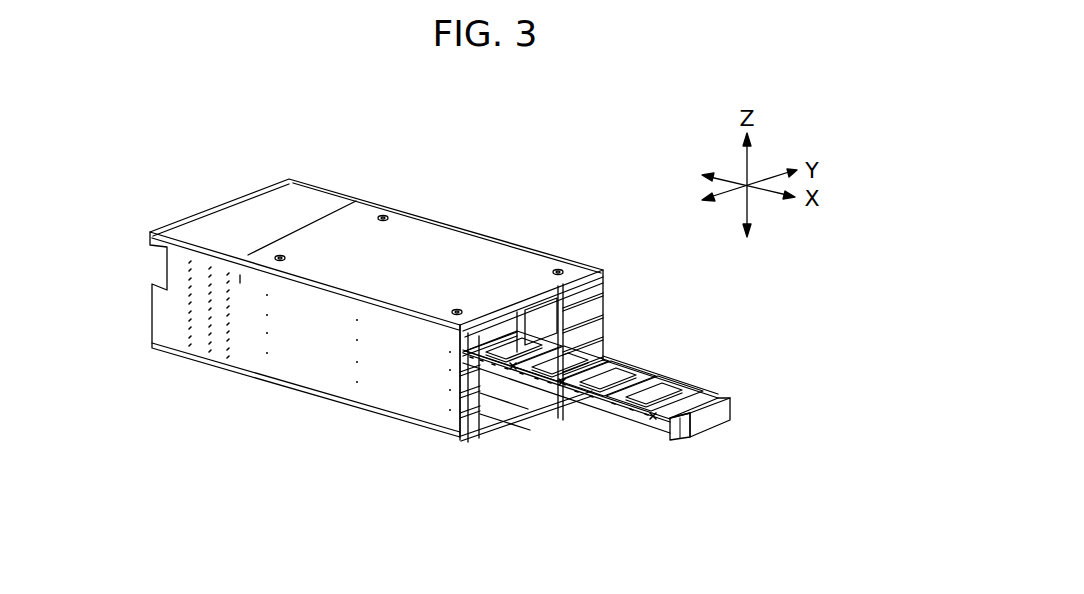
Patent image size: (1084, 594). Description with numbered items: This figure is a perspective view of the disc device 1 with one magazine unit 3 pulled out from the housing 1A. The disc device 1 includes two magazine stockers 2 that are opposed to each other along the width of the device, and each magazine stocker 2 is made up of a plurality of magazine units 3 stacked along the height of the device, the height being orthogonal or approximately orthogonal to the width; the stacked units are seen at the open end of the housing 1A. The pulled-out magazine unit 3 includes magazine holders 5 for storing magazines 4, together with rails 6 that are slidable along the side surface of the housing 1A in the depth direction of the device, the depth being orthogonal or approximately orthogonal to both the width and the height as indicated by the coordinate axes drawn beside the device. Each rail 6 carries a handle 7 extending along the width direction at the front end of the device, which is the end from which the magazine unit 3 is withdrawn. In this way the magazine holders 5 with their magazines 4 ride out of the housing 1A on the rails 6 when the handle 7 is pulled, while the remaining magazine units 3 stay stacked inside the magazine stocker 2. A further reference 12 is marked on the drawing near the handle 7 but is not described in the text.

The disc device 1 is at (467, 245).
The housing 1A is at (323, 382).
The magazine stocker 2 is at (672, 240).
The magazine unit 3 is at (602, 288).
The magazine 4 is at (663, 386).
The magazine holder 5 is at (511, 370).
The rail 6 is at (603, 402).
The handle 7 is at (710, 418).
The handle portion 12 is at (682, 433).